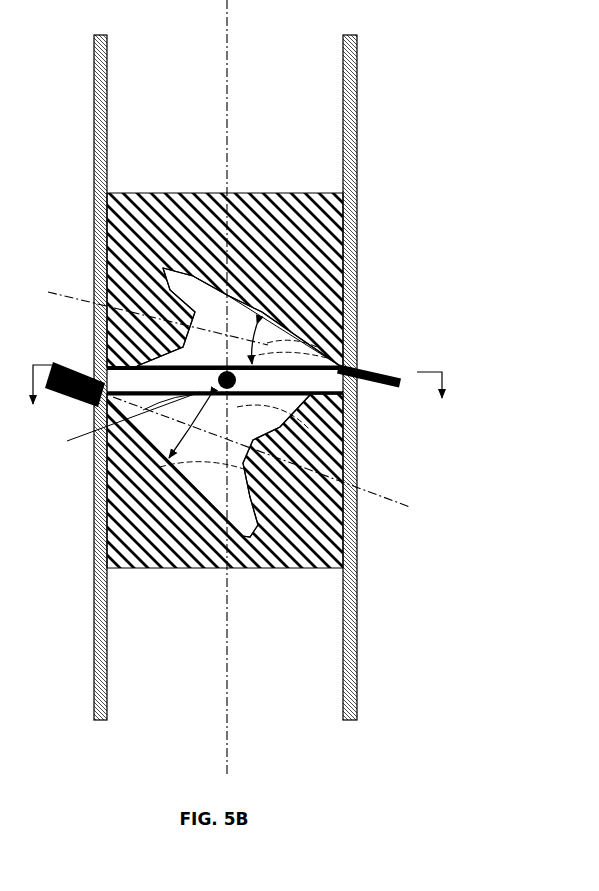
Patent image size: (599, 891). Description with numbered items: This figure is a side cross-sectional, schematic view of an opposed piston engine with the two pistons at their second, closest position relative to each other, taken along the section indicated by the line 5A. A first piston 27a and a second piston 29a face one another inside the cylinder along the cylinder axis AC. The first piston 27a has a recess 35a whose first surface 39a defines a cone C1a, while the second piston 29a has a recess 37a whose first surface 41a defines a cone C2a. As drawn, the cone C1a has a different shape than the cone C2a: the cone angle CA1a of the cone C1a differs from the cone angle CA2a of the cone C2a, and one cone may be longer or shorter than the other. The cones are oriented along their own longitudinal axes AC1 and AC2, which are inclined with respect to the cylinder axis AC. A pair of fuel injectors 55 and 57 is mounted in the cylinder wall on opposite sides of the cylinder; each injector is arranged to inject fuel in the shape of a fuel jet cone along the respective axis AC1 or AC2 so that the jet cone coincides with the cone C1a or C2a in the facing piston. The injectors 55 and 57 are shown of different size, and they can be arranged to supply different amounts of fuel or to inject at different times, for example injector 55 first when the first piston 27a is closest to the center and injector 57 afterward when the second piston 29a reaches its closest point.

The first piston 27a is at (168, 193).
The second piston 29a is at (157, 570).
The recess 35a is at (213, 313).
The recess 37a is at (218, 492).
The first surface 39a is at (257, 322).
The first surface 41a is at (263, 467).
The fuel injector 55 is at (383, 386).
The fuel injector 57 is at (52, 362).
The axis of the cylinder AC is at (227, 78).
The longitudinal axis of the first cone AC1 is at (67, 292).
The longitudinal axis of the second cone AC2 is at (281, 457).
The cone C1a is at (268, 333).
The cone C2a is at (267, 414).
The cone angle CA1a is at (332, 358).
The cone angle CA2a is at (117, 426).
The section line 5A is at (240, 400).